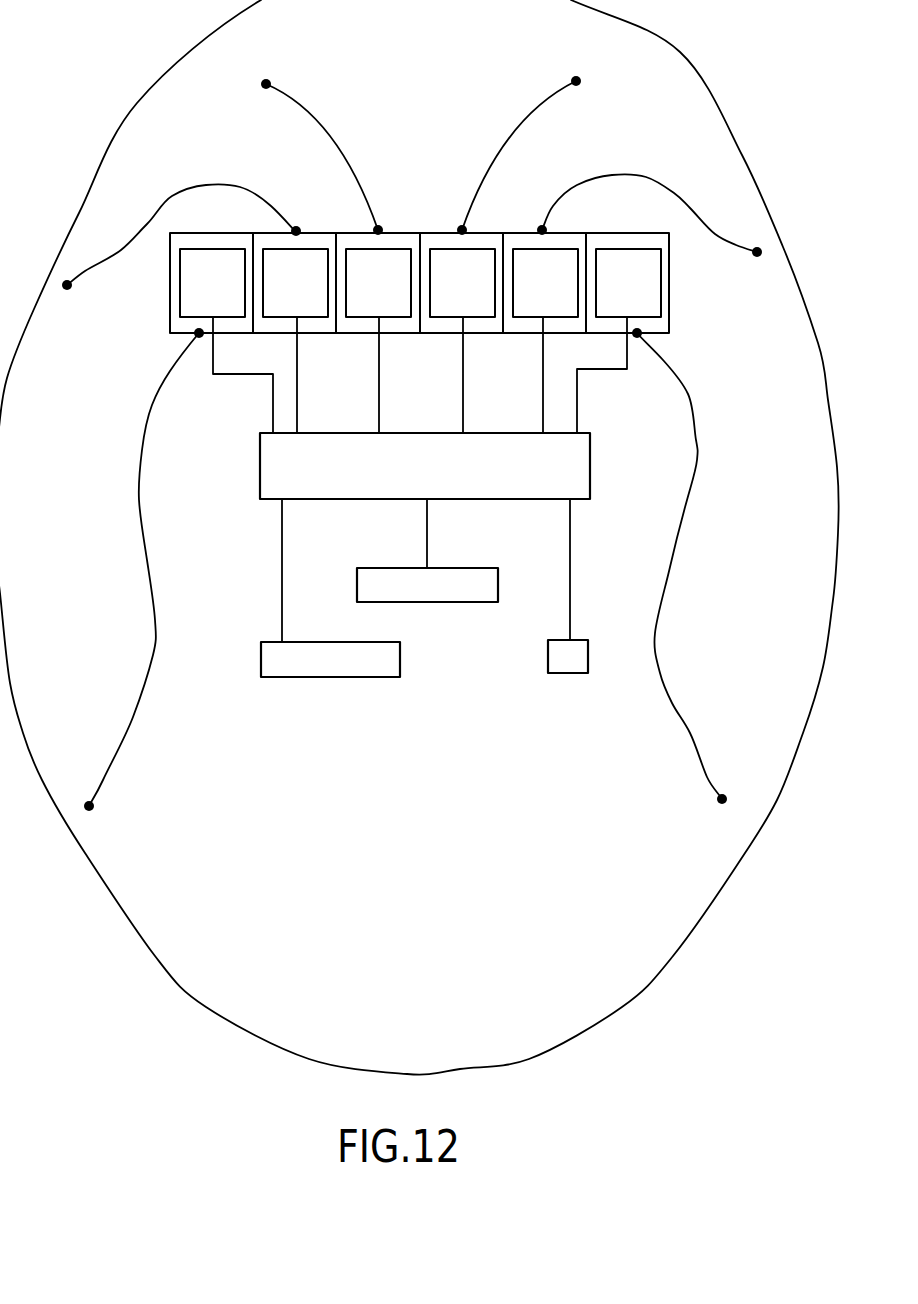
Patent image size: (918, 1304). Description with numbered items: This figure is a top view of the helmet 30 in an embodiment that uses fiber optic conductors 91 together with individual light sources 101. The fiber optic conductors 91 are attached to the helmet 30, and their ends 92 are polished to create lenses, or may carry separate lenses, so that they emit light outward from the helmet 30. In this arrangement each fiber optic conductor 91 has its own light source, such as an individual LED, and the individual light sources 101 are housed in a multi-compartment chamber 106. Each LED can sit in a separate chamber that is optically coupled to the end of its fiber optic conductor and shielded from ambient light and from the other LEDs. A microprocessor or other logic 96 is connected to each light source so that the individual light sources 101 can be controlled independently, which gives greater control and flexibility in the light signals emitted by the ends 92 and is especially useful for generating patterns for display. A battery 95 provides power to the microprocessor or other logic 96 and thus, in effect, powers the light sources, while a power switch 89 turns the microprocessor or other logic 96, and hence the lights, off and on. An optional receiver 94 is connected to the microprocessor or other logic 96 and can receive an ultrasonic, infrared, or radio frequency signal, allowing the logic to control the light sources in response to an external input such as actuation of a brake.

The helmet 30 is at (635, 1033).
The power switch 89 is at (550, 673).
The fiber optic conductors 91 is at (330, 136).
The ends of the fiber optic conductors 92 is at (266, 84).
The receiver 94 is at (300, 677).
The battery 95 is at (468, 602).
The microprocessor or other logic 96 is at (590, 452).
The individual light sources 101 is at (180, 302).
The multi-compartment chamber 106 is at (180, 270).